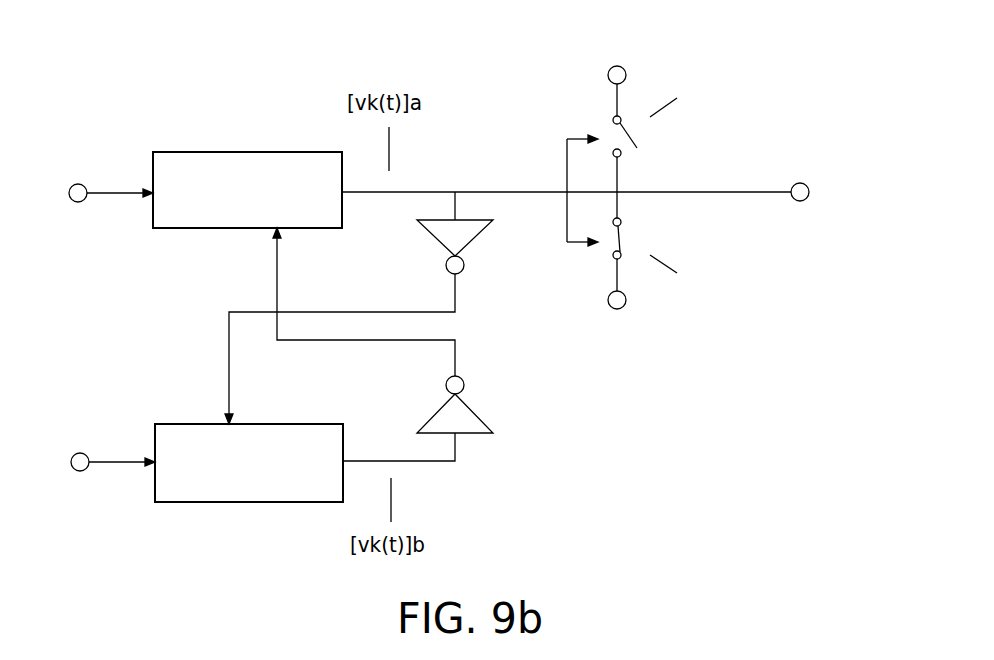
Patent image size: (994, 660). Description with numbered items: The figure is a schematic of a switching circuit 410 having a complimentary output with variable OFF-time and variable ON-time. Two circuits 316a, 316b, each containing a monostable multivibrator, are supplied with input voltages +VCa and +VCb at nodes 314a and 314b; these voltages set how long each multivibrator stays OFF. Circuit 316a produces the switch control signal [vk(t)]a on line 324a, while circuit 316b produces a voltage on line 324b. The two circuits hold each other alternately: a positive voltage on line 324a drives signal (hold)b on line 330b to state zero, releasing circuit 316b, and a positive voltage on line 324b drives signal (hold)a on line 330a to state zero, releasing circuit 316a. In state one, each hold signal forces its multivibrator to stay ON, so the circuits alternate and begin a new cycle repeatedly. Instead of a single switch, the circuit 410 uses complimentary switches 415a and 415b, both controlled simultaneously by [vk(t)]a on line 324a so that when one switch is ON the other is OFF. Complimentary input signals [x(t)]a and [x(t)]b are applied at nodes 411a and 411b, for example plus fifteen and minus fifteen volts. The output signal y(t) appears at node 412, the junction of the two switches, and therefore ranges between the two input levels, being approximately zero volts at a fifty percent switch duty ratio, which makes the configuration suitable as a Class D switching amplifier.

The node 314a is at (78, 127).
The node 314b is at (81, 527).
The circuit 316a is at (248, 136).
The circuit 316b is at (250, 516).
The line 324a is at (483, 171).
The line 324b is at (447, 477).
The line 330a is at (255, 276).
The line 330b is at (210, 350).
The node 411a is at (650, 34).
The node 411b is at (653, 339).
The complimentary switch 415a is at (650, 145).
The complimentary switch 415b is at (650, 228).
The node 412 is at (848, 156).
The switching circuit 410 is at (680, 464).